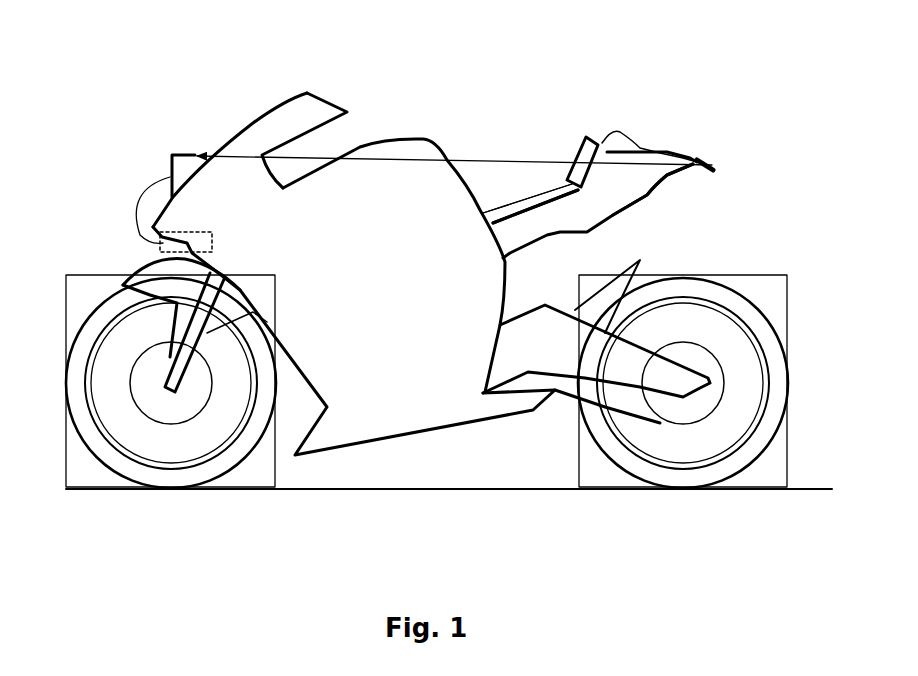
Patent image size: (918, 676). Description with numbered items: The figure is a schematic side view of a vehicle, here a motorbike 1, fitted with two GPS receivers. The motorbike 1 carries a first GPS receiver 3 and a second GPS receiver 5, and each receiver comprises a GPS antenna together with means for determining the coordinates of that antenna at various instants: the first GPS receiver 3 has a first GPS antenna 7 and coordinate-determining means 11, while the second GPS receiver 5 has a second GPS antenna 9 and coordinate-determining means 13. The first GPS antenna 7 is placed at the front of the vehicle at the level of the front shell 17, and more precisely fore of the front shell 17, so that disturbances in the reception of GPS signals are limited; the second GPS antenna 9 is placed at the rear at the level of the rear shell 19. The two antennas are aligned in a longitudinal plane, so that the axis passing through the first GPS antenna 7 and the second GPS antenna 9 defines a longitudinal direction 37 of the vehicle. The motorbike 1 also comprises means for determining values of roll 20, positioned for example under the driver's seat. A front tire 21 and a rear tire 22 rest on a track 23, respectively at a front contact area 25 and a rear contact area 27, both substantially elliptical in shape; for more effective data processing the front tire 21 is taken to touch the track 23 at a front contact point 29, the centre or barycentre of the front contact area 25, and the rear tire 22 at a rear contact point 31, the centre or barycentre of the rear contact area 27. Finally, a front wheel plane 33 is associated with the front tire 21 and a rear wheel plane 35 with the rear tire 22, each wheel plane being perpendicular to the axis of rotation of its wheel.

The motorbike 1 is at (455, 135).
The first GPS receiver 3 is at (132, 155).
The second GPS receiver 5 is at (668, 132).
The first GPS antenna 7 is at (172, 153).
The second GPS antenna 9 is at (714, 165).
The means for determining coordinates 11 is at (212, 237).
The means for determining coordinates 13 is at (598, 138).
The front shell 17 is at (253, 117).
The rear shell 19 is at (632, 176).
The means for determining values of roll 20 is at (503, 218).
The front tire 21 is at (78, 385).
The rear tire 22 is at (779, 371).
The track 23 is at (772, 491).
The front contact area 25 is at (148, 492).
The rear contact area 27 is at (662, 492).
The front contact point 29 is at (172, 492).
The rear contact point 31 is at (681, 492).
The front wheel plane 33 is at (96, 273).
The rear wheel plane 35 is at (751, 275).
The longitudinal direction 37 is at (548, 157).